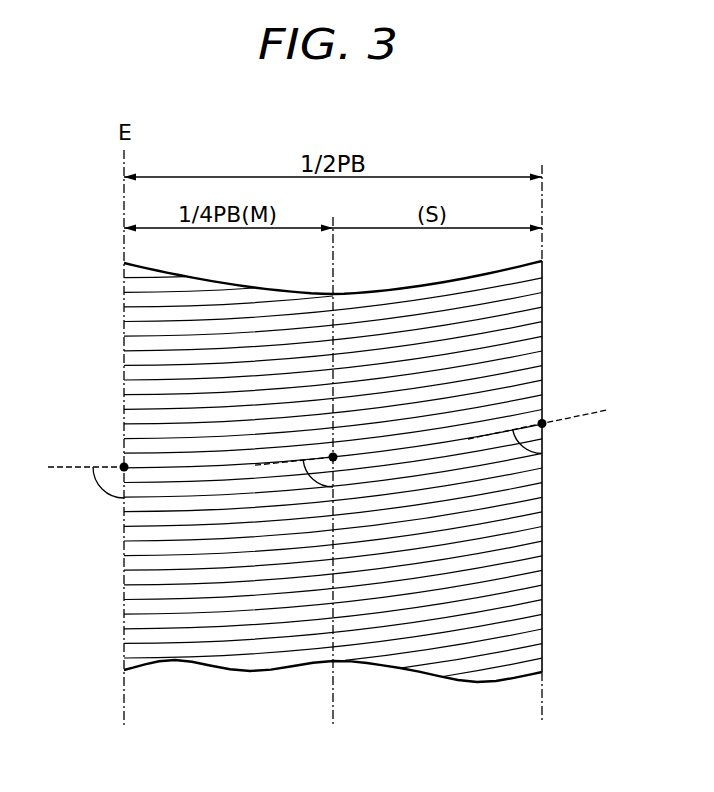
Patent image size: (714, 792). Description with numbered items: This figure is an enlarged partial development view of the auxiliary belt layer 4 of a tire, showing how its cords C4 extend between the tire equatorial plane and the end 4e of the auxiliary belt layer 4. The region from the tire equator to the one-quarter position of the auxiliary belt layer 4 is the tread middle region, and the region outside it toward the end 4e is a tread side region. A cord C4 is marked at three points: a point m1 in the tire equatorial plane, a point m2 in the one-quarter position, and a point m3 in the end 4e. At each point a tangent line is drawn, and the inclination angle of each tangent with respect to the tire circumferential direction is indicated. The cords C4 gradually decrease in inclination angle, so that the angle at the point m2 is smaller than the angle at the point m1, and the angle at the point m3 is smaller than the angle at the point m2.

The auxiliary belt layer 4 is at (142, 361).
The end of the auxiliary belt layer 4e is at (544, 606).
The cords of the auxiliary belt layer C4 is at (518, 353).
The point in the tire equatorial plane m1 is at (126, 468).
The point in the ¼ position m2 is at (335, 458).
The point in the end of the auxiliary belt layer m3 is at (544, 424).